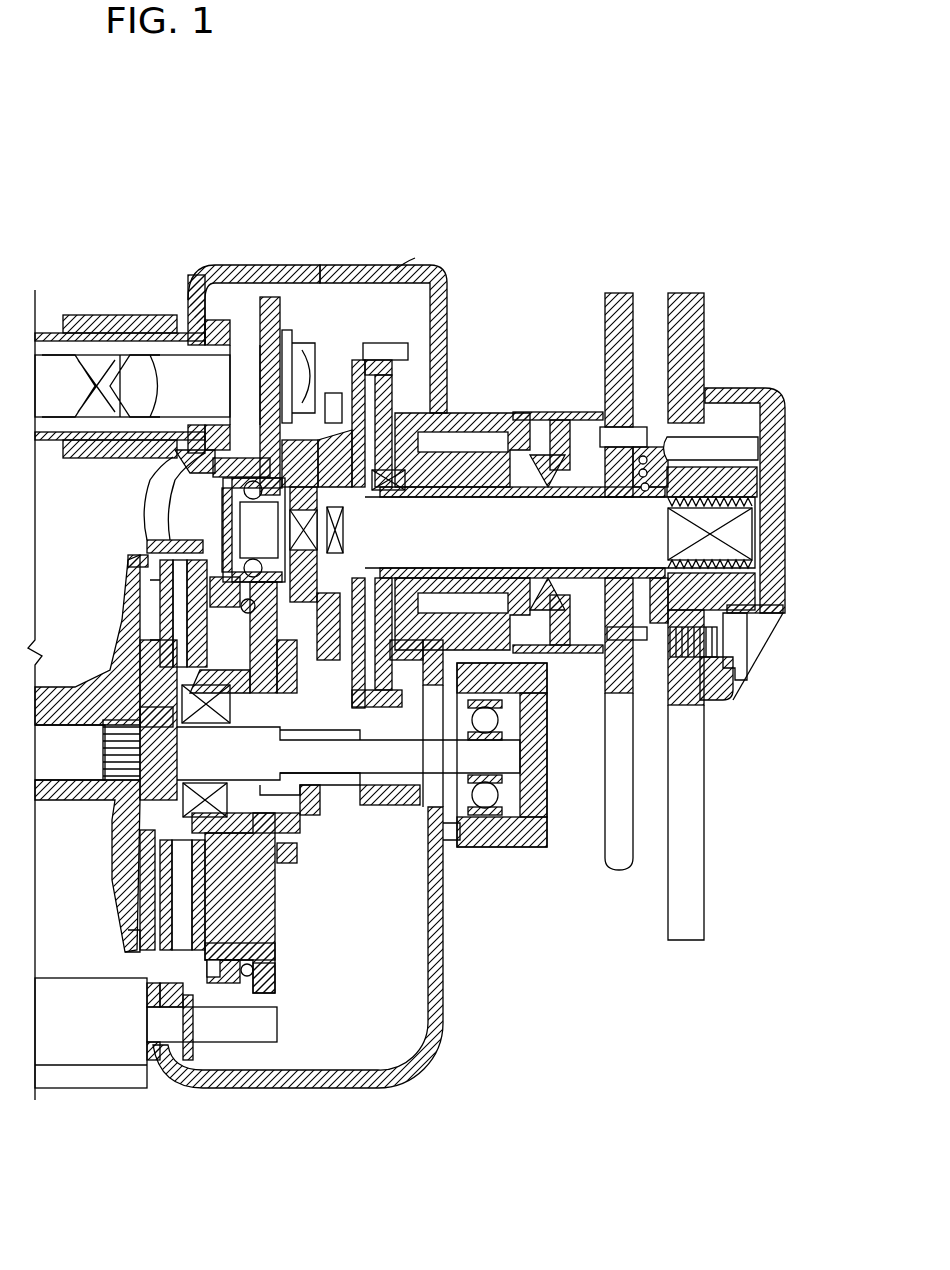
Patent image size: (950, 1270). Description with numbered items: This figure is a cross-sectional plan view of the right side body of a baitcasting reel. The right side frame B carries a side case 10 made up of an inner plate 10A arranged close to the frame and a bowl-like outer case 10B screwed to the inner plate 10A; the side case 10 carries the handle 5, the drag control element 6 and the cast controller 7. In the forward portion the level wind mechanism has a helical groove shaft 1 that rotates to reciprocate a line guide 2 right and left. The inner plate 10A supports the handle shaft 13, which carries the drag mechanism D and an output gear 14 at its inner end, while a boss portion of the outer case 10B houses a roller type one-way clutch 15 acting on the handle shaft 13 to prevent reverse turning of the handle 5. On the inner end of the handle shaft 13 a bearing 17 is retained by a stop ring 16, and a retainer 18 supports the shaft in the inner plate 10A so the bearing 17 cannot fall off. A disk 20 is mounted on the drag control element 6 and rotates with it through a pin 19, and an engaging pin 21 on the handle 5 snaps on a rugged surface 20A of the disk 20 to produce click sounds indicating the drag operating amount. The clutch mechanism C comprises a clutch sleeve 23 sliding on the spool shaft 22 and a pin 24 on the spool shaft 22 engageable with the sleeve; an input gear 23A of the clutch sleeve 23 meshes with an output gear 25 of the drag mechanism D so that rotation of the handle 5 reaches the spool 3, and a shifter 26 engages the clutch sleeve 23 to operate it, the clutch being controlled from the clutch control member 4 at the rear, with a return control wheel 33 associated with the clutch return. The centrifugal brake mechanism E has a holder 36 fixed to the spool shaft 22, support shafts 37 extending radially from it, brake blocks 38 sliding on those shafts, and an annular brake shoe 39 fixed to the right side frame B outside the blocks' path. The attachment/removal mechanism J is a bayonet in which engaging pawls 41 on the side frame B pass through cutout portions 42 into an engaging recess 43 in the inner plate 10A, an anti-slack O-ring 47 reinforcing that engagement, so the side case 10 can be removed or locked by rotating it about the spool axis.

The helical groove shaft 1 is at (55, 362).
The line guide 2 is at (125, 316).
The spool 3 is at (65, 693).
The clutch control member 4 is at (90, 1078).
The handle 5 is at (700, 925).
The drag control element 6 is at (628, 862).
The cast controller 7 is at (510, 838).
The side case 10 is at (317, 270).
The inner plate 10A is at (295, 265).
The outer case 10B is at (335, 265).
The handle shaft 13 is at (560, 532).
The output gear 14 is at (307, 445).
The roller type one-way clutch 15 is at (457, 465).
The stop ring 16 is at (235, 492).
The bearing 17 is at (215, 478).
The retainer 18 is at (283, 617).
The pin 19 is at (620, 435).
The disk 20 is at (645, 427).
The rugged surface 20A is at (747, 622).
The engaging pin 21 is at (737, 443).
The spool shaft 22 is at (70, 767).
The clutch sleeve 23 is at (289, 903).
The input gear 23A is at (397, 792).
The pin 24 is at (348, 825).
The output gear 25 is at (393, 342).
The shifter 26 is at (300, 792).
The return control wheel 33 is at (409, 244).
The holder 36 is at (125, 887).
The support shafts 37 is at (120, 623).
The brake blocks 38 is at (140, 570).
The annular brake shoe 39 is at (150, 1000).
The engaging pawls 41 is at (233, 970).
The cutout portions 42 is at (222, 965).
The engaging recess 43 is at (240, 967).
The anti-slack O-ring 47 is at (247, 612).
The right side frame B is at (222, 262).
The clutch mechanism C is at (392, 918).
The drag mechanism D is at (410, 382).
The centrifugal brake mechanism E is at (233, 907).
The attachment/removal mechanism J is at (282, 993).